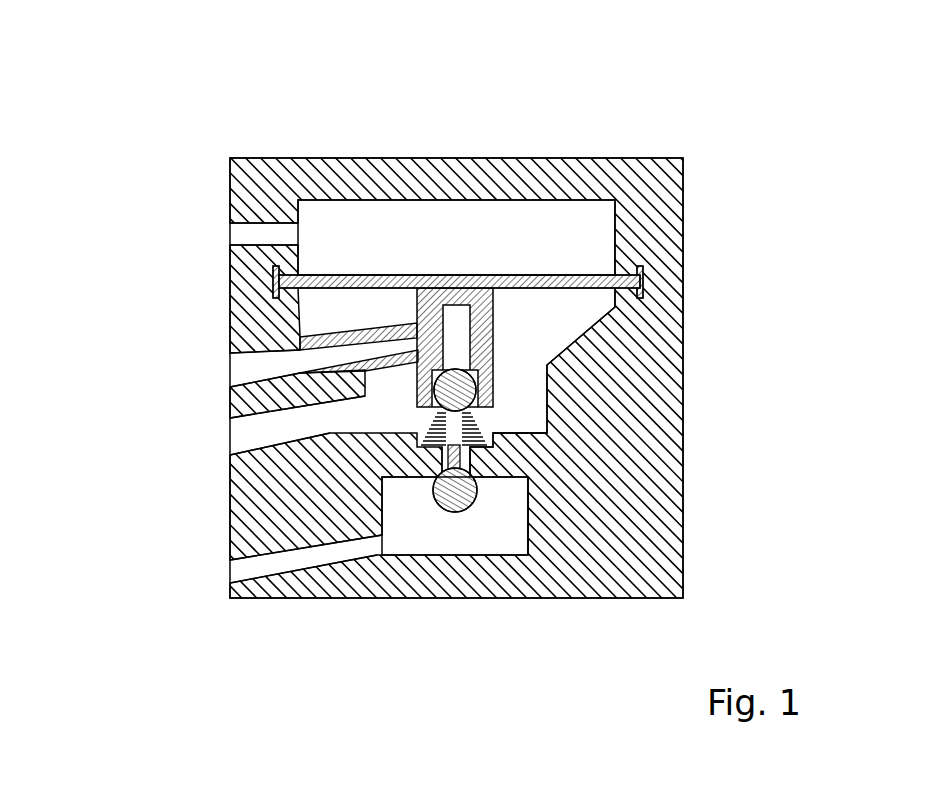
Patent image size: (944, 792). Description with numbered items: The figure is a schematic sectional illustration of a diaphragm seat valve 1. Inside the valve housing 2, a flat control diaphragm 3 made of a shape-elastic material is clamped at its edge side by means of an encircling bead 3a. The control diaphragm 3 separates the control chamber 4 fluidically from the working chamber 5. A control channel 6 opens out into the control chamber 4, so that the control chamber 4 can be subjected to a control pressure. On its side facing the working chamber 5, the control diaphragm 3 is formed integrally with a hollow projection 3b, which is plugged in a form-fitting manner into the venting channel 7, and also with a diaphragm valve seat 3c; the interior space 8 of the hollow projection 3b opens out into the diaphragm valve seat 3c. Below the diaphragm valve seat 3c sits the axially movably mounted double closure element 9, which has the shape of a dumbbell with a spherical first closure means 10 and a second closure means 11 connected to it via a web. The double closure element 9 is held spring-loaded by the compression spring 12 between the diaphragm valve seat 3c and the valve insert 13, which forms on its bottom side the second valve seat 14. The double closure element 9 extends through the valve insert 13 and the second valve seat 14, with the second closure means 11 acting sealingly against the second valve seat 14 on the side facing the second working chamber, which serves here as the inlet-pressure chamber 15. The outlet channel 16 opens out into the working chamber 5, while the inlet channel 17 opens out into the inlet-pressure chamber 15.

The diaphragm seat valve 1 is at (216, 137).
The valve housing 2 is at (685, 208).
The control diaphragm 3 is at (520, 275).
The encircling bead 3a is at (230, 283).
The hollow projection 3b is at (365, 330).
The diaphragm valve seat 3c is at (493, 367).
The control chamber 4 is at (395, 240).
The working chamber 5 is at (545, 318).
The control channel 6 is at (247, 238).
The venting channel 7 is at (260, 367).
The interior space 8 is at (232, 533).
The double closure element 9 is at (472, 496).
The first closure means 10 is at (455, 372).
The second closure means 11 is at (560, 483).
The compression spring 12 is at (482, 422).
The valve insert 13 is at (535, 445).
The second valve seat 14 is at (433, 483).
The inlet-pressure chamber 15 is at (485, 545).
The outlet channel 16 is at (280, 425).
The inlet channel 17 is at (245, 588).